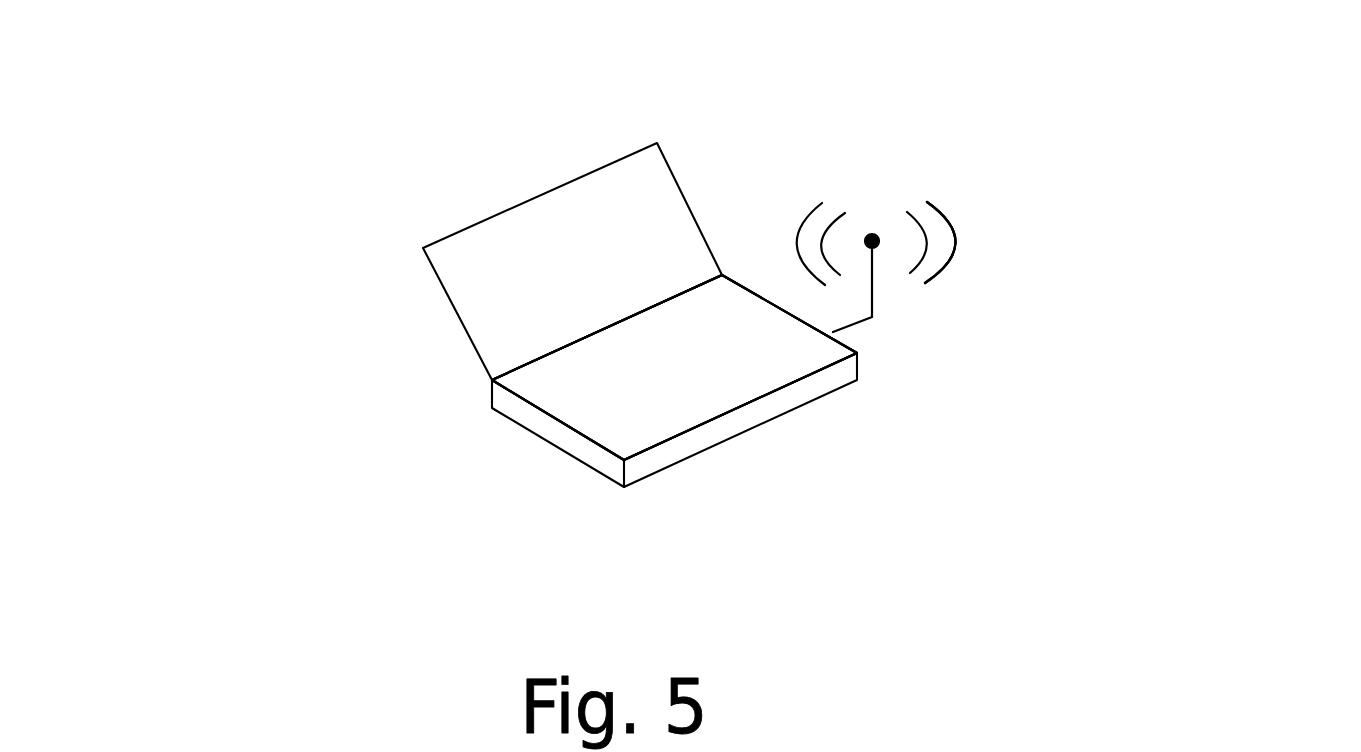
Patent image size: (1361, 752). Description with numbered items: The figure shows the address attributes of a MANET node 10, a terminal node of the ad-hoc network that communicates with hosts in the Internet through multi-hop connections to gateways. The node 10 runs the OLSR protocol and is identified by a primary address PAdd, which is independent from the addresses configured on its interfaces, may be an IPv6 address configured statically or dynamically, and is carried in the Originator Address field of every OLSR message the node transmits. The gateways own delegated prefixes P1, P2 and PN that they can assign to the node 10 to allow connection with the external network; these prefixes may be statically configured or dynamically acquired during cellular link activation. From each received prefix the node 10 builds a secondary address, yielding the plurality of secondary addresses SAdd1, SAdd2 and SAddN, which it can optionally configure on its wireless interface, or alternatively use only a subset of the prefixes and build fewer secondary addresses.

The MANET node 10 is at (767, 360).
The primary address PAdd is at (702, 385).
The delegated prefix P1 is at (602, 418).
The delegated prefix P2 is at (536, 436).
The delegated prefix PN is at (536, 475).
The secondary address SAdd1 is at (973, 233).
The secondary address SAdd2 is at (1119, 206).
The secondary address SAddN is at (1123, 281).